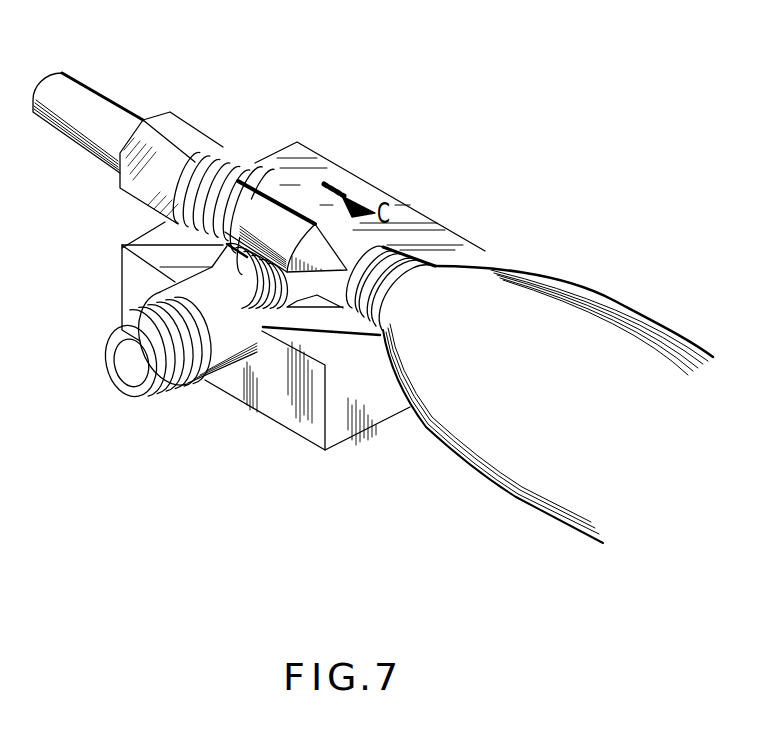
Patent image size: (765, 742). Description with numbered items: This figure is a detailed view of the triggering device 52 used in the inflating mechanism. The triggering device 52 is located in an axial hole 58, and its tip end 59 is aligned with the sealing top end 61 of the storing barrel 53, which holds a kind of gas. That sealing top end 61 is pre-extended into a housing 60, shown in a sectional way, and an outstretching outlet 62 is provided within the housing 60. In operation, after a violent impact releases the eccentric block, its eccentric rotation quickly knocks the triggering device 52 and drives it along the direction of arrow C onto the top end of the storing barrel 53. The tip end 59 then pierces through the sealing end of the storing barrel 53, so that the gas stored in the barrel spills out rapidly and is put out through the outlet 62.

The triggering device 52 is at (98, 95).
The storing barrel 53 is at (597, 305).
The axial hole 58 is at (270, 167).
The tip end 59 is at (316, 238).
The housing 60 is at (286, 407).
The sealing top end 61 is at (380, 247).
The outstretching outlet 62 is at (166, 392).